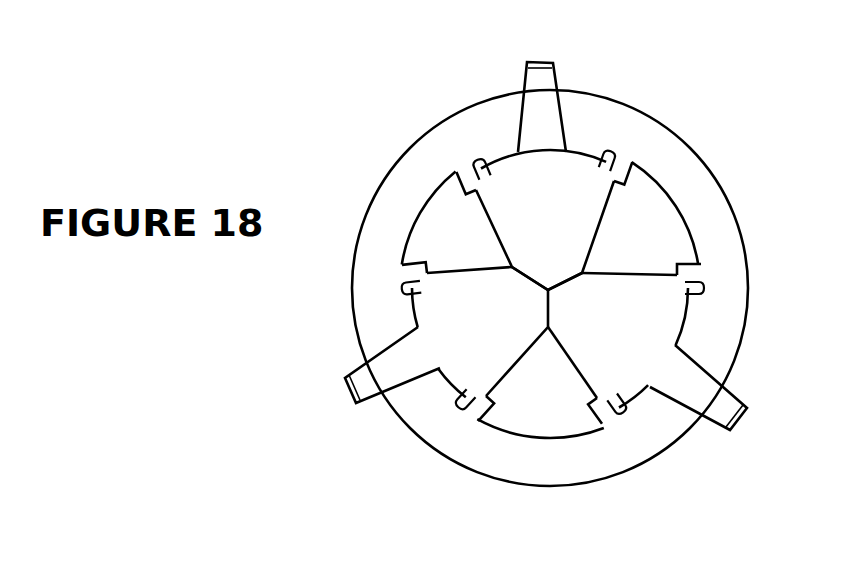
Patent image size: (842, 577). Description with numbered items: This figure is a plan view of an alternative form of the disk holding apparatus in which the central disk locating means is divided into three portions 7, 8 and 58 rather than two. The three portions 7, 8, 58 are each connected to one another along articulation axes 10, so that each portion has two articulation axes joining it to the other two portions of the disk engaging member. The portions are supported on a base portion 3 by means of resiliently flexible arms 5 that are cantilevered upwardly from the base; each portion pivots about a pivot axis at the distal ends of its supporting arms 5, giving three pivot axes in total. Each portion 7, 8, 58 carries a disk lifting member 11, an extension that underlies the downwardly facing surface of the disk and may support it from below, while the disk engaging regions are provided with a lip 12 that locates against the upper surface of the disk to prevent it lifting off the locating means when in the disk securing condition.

The base portion 3 is at (734, 252).
The arms 5 is at (405, 258).
The portion 7 is at (618, 340).
The portion 8 is at (480, 332).
The articulation axes 10 is at (532, 277).
The disk lifting member 11 is at (547, 90).
The lip 12 is at (688, 325).
The portion 58 is at (545, 220).